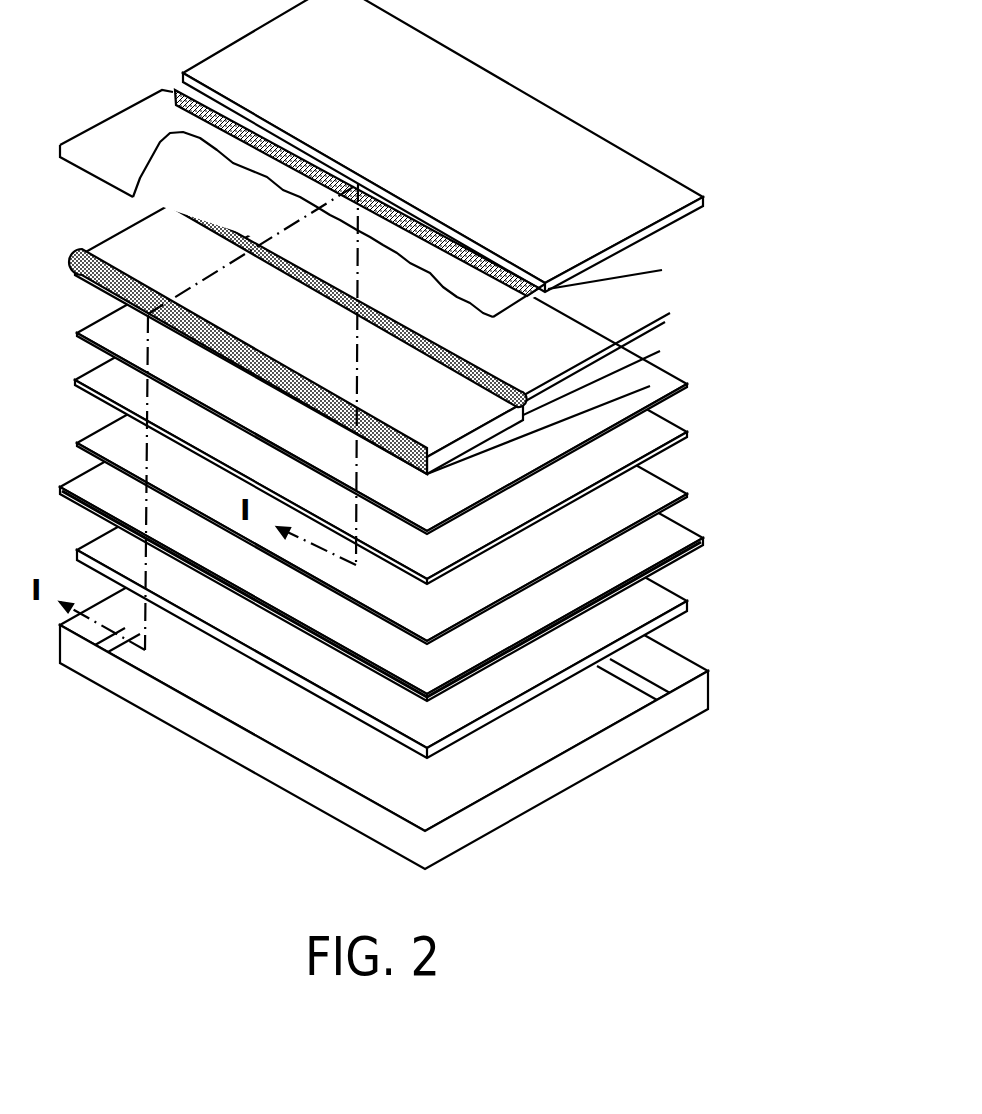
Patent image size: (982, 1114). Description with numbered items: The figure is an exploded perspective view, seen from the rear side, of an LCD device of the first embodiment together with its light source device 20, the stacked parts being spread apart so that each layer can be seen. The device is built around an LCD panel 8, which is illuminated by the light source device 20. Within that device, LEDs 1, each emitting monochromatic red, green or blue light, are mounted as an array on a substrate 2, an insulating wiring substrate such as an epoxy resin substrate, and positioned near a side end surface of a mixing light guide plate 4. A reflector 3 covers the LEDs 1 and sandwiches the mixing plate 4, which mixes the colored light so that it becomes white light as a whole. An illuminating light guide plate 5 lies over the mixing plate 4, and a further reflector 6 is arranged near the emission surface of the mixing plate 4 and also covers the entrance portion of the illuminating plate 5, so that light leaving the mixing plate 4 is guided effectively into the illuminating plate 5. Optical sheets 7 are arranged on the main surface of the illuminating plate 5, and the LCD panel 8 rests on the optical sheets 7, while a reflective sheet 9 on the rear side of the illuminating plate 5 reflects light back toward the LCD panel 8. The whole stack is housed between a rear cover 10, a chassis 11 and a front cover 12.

The LEDs 1 is at (547, 287).
The substrate 2 is at (662, 270).
The reflector 3 is at (670, 313).
The mixing light guide plate 4 is at (660, 351).
The illuminating light guide plate 5 is at (672, 430).
The reflector 6 is at (650, 386).
The optical sheets 7 is at (672, 490).
The LCD panel 8 is at (678, 601).
The reflective sheet 9 is at (690, 384).
The rear cover 10 is at (465, 80).
The chassis 11 is at (704, 538).
The front cover 12 is at (708, 670).
The light source device 20 is at (793, 190).